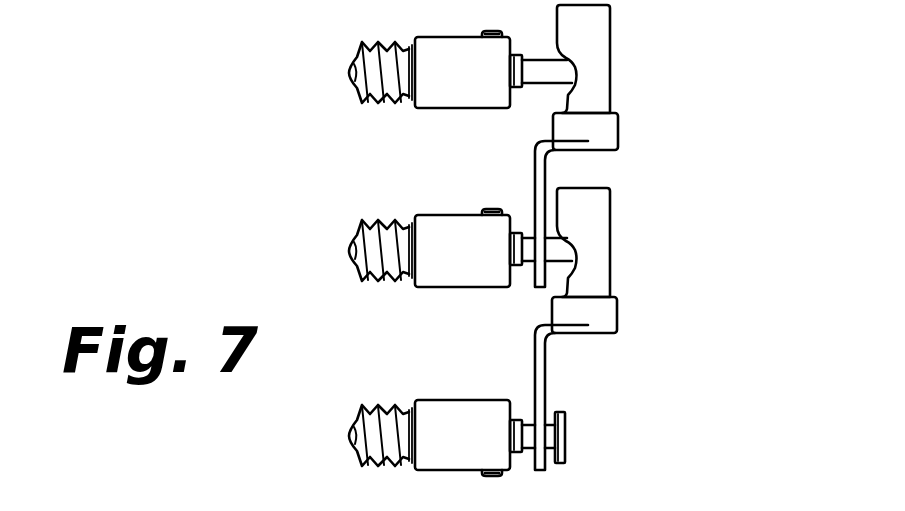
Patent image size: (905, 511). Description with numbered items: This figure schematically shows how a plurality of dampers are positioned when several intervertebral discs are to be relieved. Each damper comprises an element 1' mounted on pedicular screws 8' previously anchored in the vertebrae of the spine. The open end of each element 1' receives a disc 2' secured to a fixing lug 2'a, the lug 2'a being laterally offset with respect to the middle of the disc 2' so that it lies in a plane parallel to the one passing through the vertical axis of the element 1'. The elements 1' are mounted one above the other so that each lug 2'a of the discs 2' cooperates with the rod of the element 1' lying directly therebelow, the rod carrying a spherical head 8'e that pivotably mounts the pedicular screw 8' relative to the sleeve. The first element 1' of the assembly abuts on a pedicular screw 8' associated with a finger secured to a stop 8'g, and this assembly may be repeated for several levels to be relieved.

The pedicular screw 8' is at (413, 253).
The element 1' is at (629, 151).
The spherical head 8'e is at (615, 164).
The disc 2' is at (625, 225).
The fixing lug 2'a is at (625, 305).
The stop 8'g is at (618, 441).